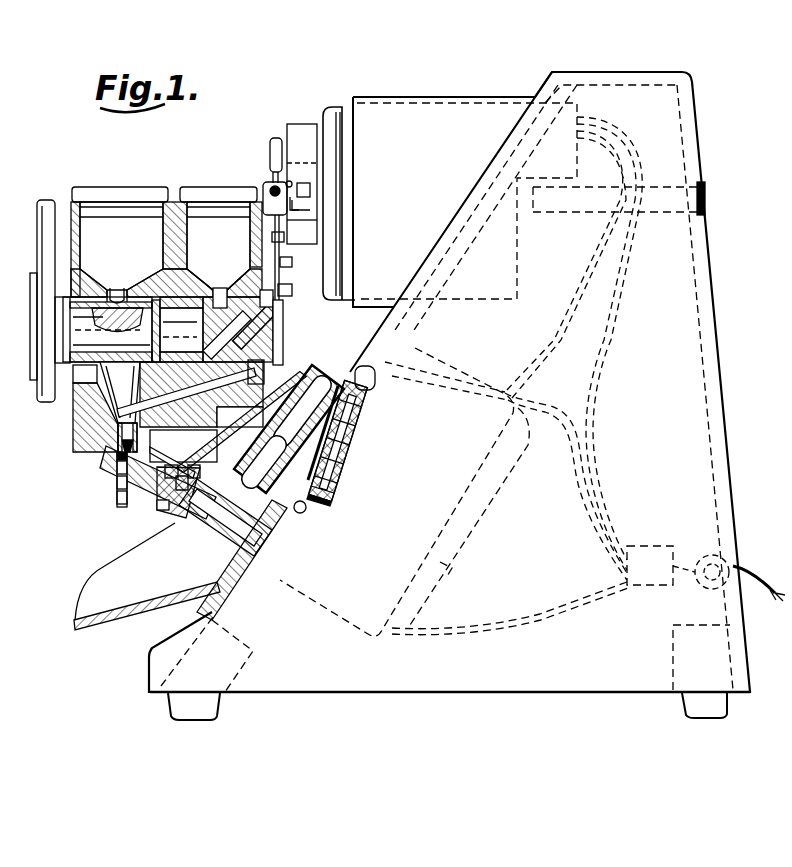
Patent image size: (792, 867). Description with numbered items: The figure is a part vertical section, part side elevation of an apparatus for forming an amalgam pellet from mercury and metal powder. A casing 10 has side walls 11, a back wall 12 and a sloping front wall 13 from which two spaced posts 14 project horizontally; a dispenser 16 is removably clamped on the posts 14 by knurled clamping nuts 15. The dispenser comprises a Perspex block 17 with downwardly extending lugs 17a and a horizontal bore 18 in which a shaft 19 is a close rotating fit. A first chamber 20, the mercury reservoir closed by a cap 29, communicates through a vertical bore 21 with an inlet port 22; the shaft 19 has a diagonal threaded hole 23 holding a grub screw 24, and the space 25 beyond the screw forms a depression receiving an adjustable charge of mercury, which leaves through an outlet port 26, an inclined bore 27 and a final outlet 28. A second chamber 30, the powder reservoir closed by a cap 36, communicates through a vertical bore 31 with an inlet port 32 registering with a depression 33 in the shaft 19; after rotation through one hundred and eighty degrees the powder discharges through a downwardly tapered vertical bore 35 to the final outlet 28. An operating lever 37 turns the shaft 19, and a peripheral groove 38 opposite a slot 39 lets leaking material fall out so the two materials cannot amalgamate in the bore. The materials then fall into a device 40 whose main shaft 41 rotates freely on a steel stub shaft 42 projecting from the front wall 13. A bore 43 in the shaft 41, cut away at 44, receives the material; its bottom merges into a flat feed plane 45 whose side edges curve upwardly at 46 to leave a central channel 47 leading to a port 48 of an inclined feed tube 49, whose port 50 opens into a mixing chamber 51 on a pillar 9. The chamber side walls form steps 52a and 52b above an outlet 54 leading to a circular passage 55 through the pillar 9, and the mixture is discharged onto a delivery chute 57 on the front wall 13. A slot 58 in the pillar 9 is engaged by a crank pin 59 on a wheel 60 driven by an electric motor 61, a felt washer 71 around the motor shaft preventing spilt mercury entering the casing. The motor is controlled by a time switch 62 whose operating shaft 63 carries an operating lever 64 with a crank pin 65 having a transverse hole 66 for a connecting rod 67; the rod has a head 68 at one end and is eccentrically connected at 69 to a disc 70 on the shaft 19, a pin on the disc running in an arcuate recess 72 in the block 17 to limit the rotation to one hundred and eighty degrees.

The pillar 9 is at (337, 483).
The casing 10 is at (618, 73).
The side walls 11 is at (648, 130).
The back wall 12 is at (700, 258).
The sloping front wall 13 is at (500, 207).
The spaced posts 14 is at (275, 517).
The knurled clamping nuts 15 is at (110, 480).
The dispenser 16 is at (182, 195).
The block 17 is at (176, 205).
The downwardly extending lugs 17a is at (168, 516).
The horizontal bore 18 is at (242, 355).
The shaft 19 is at (72, 366).
The first chamber 20 is at (218, 228).
The vertical bore 21 is at (222, 290).
The inlet port 22 is at (215, 288).
The threaded hole 23 is at (300, 300).
The grub screw 24 is at (285, 322).
The space 25 is at (230, 328).
The outlet port 26 is at (263, 370).
The inclined bore 27 is at (262, 380).
The final outlet 28 is at (118, 440).
The cap 29 is at (204, 189).
The second chamber 30 is at (85, 227).
The vertical bore 31 is at (112, 290).
The inlet port 32 is at (115, 290).
The depression 33 is at (128, 300).
The downwardly tapered vertical bore 35 is at (102, 398).
The cap 36 is at (139, 189).
The operating lever 37 is at (45, 198).
The peripheral groove 38 is at (186, 306).
The slot 39 is at (123, 394).
The device 40 is at (186, 520).
The main shaft 41 is at (172, 466).
The steel stub shaft 42 is at (240, 535).
The bore 43 is at (117, 481).
The cut away 44 is at (117, 465).
The flat feed plane 45 is at (117, 497).
The upwardly curved side edge portions 46 is at (162, 512).
The central channel 47 is at (187, 521).
The port 48 is at (193, 466).
The inclined feed tube 49 is at (262, 419).
The port 50 is at (320, 368).
The mixing chamber 51 is at (370, 368).
The step 52a is at (362, 400).
The step 52b is at (359, 413).
The outlet 54 is at (350, 445).
The passage 55 is at (330, 500).
The delivery chute 57 is at (112, 605).
The slot 58 is at (356, 426).
The crank pin 59 is at (361, 418).
The wheel 60 is at (343, 464).
The electric motor 61 is at (372, 603).
The time switch 62 is at (448, 130).
The operating shaft 63 is at (262, 247).
The operating lever 64 is at (300, 128).
The crank pin 65 is at (291, 183).
The transverse hole 66 is at (267, 182).
The connecting rod 67 is at (306, 203).
The head 68 is at (272, 138).
The eccentric connection 69 is at (286, 262).
The disc 70 is at (286, 290).
The felt washer 71 is at (303, 512).
The arcuate recess 72 is at (279, 237).